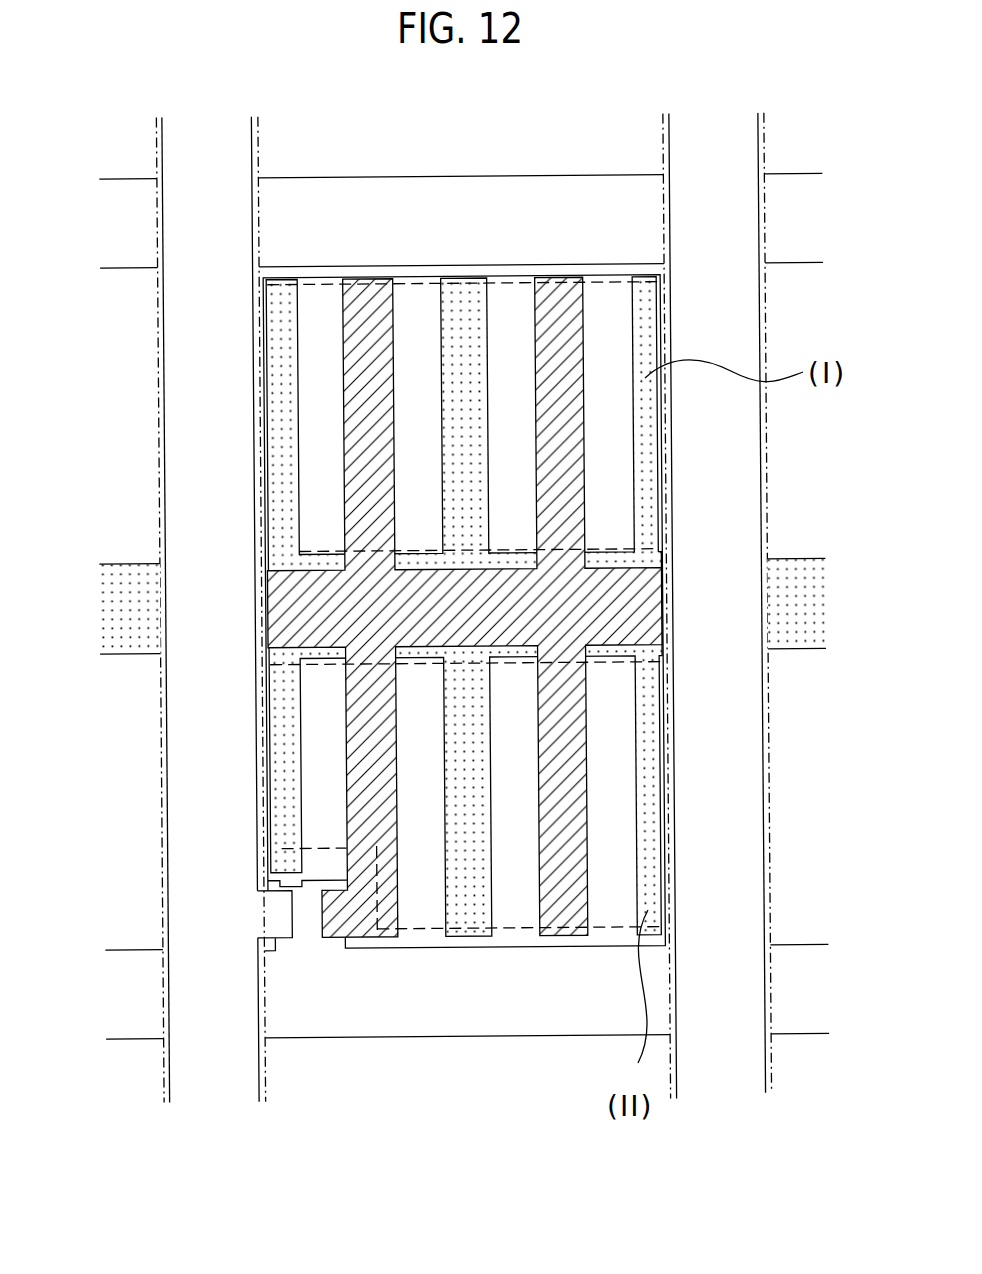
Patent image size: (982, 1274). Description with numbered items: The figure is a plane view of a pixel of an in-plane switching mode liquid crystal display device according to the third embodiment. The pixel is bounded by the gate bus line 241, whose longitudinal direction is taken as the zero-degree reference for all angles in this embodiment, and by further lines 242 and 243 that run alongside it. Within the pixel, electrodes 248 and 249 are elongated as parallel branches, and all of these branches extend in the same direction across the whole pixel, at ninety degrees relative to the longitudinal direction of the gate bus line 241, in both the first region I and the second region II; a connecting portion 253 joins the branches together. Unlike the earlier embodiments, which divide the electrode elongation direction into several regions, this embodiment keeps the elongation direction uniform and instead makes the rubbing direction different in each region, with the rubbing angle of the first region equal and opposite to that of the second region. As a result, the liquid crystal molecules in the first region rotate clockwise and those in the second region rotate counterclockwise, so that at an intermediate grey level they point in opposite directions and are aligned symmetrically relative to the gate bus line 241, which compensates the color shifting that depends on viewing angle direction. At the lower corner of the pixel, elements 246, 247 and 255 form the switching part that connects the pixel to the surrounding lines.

The gate bus line 241 is at (137, 1033).
The data line 242 is at (753, 844).
The common line 243 is at (99, 562).
The source electrode 246 is at (268, 908).
The drain electrode 247 is at (357, 917).
The pixel electrode branch 248 is at (367, 302).
The common electrode branch 249 is at (468, 302).
The pixel electrode connecting portion 253 is at (292, 618).
The channel region 255 is at (307, 937).